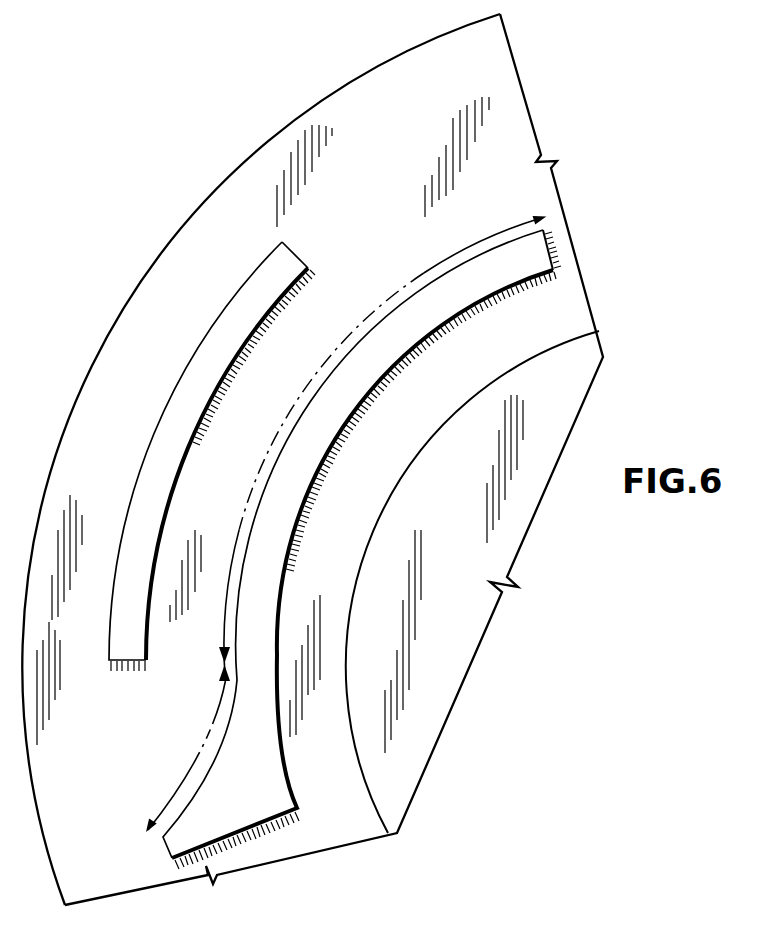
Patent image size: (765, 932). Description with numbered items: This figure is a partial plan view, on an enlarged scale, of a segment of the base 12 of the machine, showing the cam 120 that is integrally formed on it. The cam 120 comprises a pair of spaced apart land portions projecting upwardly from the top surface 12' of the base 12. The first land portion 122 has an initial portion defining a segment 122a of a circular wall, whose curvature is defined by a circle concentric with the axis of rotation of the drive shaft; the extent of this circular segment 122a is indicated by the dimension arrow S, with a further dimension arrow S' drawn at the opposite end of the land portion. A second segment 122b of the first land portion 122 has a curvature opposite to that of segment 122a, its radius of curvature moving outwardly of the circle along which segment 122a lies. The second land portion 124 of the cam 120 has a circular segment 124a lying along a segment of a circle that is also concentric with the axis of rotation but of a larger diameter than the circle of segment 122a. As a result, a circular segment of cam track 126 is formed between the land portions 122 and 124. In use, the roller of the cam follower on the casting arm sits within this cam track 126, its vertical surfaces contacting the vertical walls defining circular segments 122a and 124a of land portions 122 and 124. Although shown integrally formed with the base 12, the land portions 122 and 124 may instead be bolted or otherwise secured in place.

The base 12 is at (320, 459).
The top surface of base 12' is at (261, 459).
The cam 120 is at (198, 456).
The first land portion 122 is at (362, 398).
The circular segment of first land portion 122a is at (380, 328).
The second segment of first land portion 122b is at (190, 790).
The second land portion 124 is at (229, 307).
The circular segment of second land portion 124a is at (175, 493).
The cam track 126 is at (278, 405).
The dimension arrow S is at (382, 442).
The dimension arrow S' is at (188, 748).